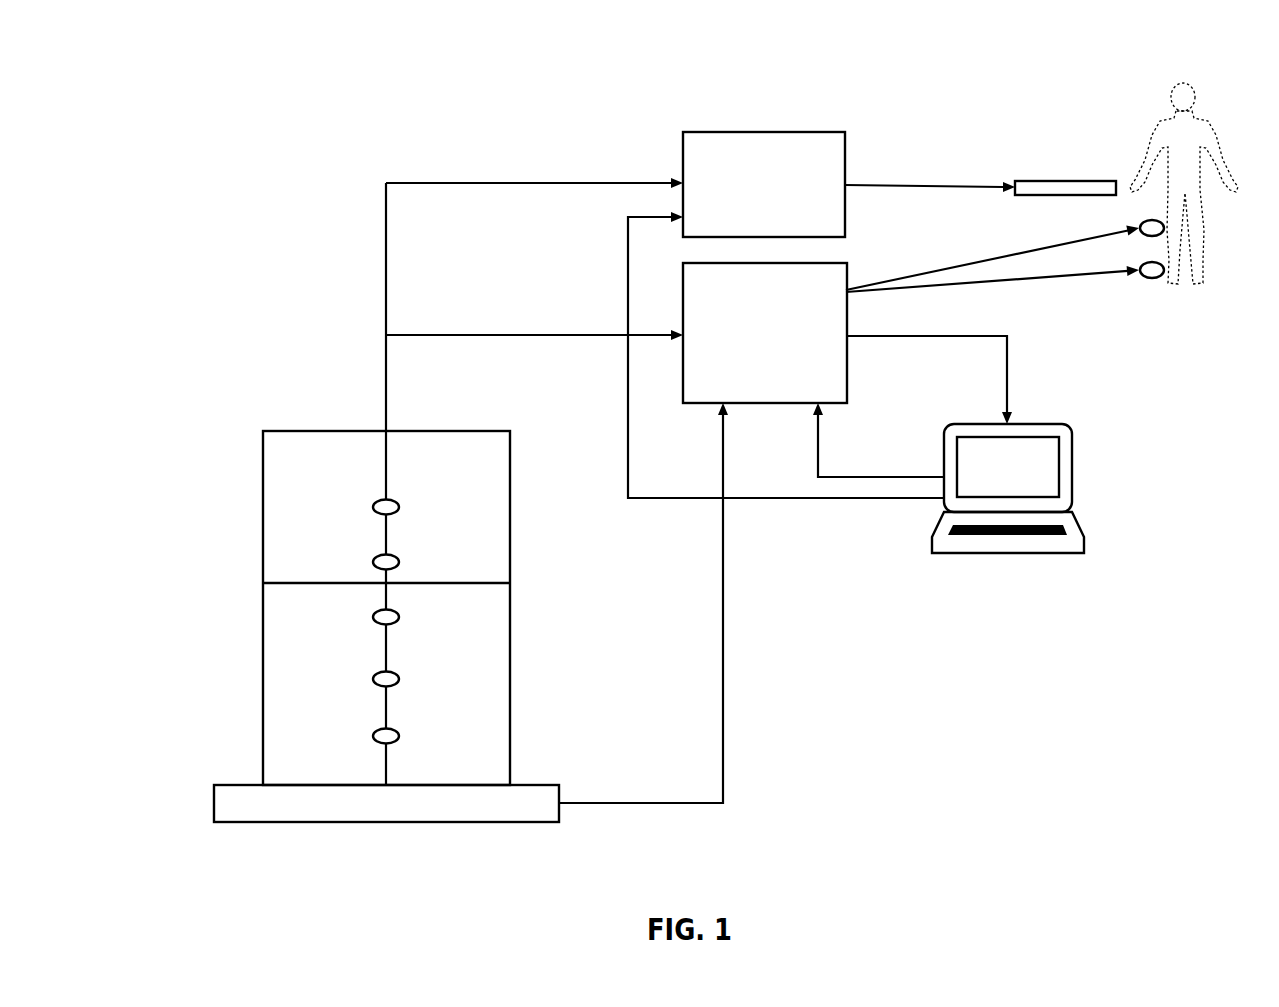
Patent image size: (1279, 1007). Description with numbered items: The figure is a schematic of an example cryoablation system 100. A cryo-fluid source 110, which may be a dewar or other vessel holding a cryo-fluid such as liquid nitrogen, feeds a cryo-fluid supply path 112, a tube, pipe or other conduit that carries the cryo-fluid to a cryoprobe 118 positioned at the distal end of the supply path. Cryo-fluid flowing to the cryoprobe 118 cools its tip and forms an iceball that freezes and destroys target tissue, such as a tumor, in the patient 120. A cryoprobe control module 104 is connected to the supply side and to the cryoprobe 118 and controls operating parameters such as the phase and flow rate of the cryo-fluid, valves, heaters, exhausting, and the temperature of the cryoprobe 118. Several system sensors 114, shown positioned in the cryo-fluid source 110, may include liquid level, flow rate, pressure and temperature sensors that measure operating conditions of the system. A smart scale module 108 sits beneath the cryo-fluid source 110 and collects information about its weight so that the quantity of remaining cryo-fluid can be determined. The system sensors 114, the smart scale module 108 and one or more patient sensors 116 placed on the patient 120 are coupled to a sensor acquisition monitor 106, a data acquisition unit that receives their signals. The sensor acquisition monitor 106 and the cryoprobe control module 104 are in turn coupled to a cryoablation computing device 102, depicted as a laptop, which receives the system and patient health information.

The cryoablation system 100 is at (146, 66).
The cryoablation computing device 102 is at (1072, 470).
The cryoprobe control module 104 is at (827, 132).
The sensor acquisition monitor 106 is at (847, 388).
The smart scale module 108 is at (482, 822).
The cryo-fluid source 110 is at (263, 527).
The cryo-fluid supply path 112 is at (386, 383).
The system sensors 114 is at (385, 497).
The patient sensors 116 is at (1157, 277).
The cryoprobe 118 is at (1030, 183).
The patient 120 is at (1198, 77).